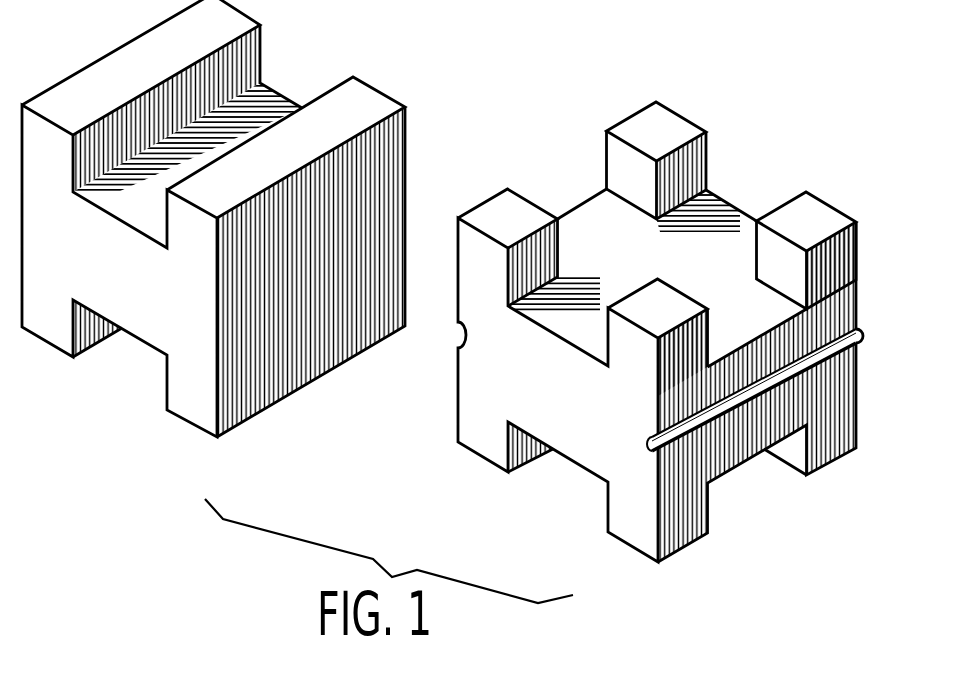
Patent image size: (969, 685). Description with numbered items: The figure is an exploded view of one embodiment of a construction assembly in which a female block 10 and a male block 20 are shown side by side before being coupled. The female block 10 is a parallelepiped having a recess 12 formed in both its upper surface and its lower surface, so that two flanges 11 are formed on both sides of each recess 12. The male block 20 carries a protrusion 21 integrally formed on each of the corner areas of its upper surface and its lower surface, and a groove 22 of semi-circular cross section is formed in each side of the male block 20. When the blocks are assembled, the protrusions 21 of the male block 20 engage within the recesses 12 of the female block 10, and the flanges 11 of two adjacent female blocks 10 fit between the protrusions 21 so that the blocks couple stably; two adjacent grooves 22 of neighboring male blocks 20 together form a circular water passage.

The female block 10 is at (230, 218).
The flange 11 is at (372, 102).
The recess 12 is at (287, 75).
The male block 20 is at (660, 310).
The protrusion 21 is at (665, 123).
The groove 22 is at (734, 402).